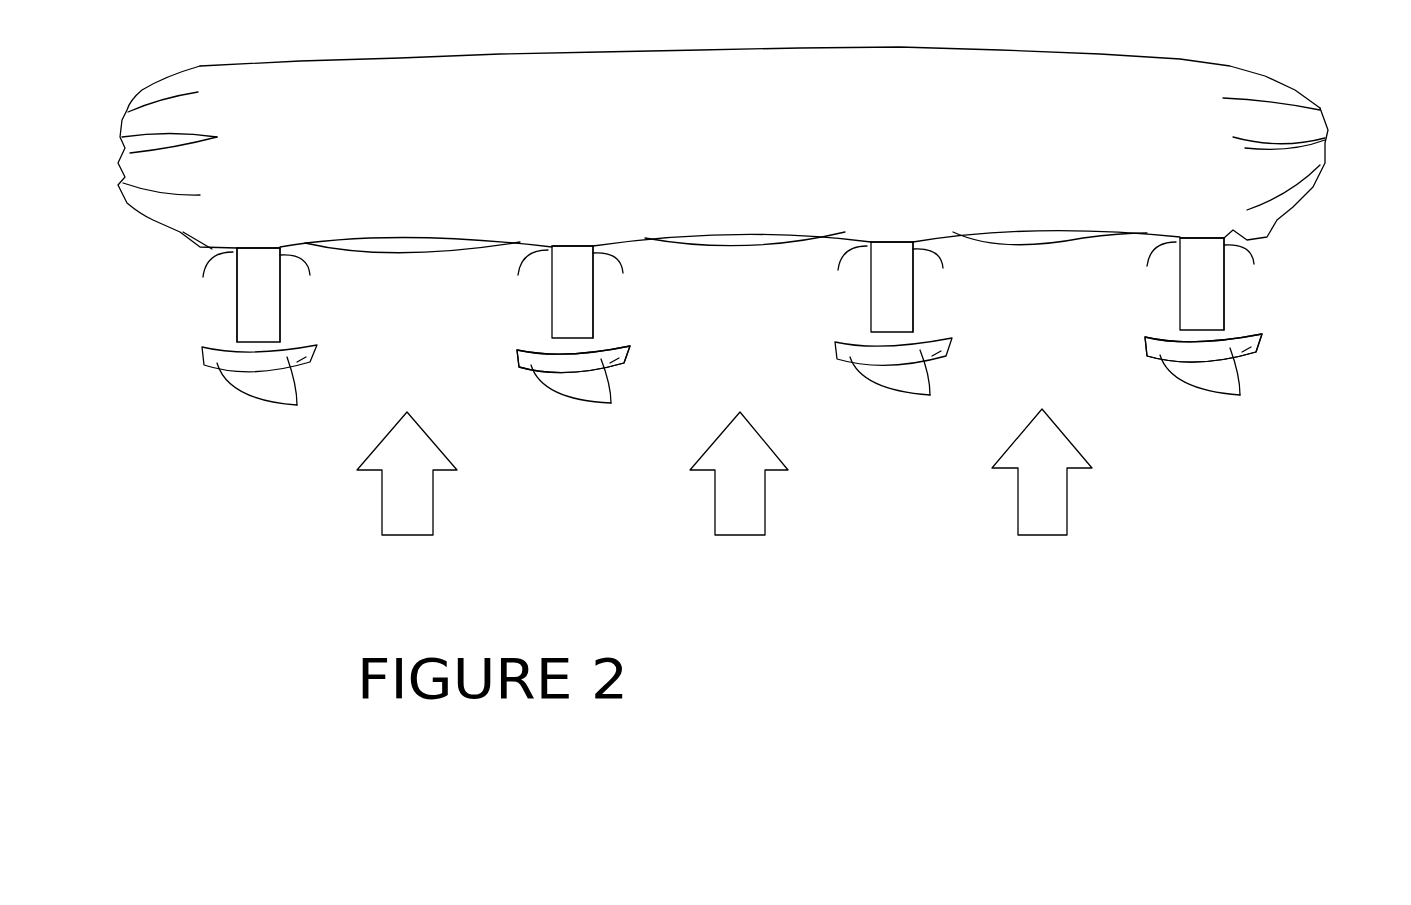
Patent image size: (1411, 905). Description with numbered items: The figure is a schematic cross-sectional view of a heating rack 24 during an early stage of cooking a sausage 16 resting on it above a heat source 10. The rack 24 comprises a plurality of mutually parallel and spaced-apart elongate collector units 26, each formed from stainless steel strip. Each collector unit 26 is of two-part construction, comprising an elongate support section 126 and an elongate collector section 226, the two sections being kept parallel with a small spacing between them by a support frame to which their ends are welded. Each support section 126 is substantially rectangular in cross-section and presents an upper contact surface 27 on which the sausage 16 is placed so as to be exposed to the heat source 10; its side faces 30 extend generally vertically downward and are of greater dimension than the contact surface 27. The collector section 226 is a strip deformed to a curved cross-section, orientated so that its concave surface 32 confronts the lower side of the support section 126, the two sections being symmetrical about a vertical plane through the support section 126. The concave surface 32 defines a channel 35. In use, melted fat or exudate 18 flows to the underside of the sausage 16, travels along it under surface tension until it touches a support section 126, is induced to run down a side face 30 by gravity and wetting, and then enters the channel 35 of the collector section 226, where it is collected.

The heat source 10 is at (422, 523).
The substrate web 16 is at (696, 148).
The exudate 18 is at (207, 249).
The rack 24 is at (230, 308).
The collector unit 26 is at (307, 325).
The contact surface 27 is at (258, 247).
The side face 30 is at (729, 272).
The concave surface 32 is at (617, 337).
The channel 35 is at (200, 347).
The support section 126 is at (278, 305).
The collector section 226 is at (757, 388).